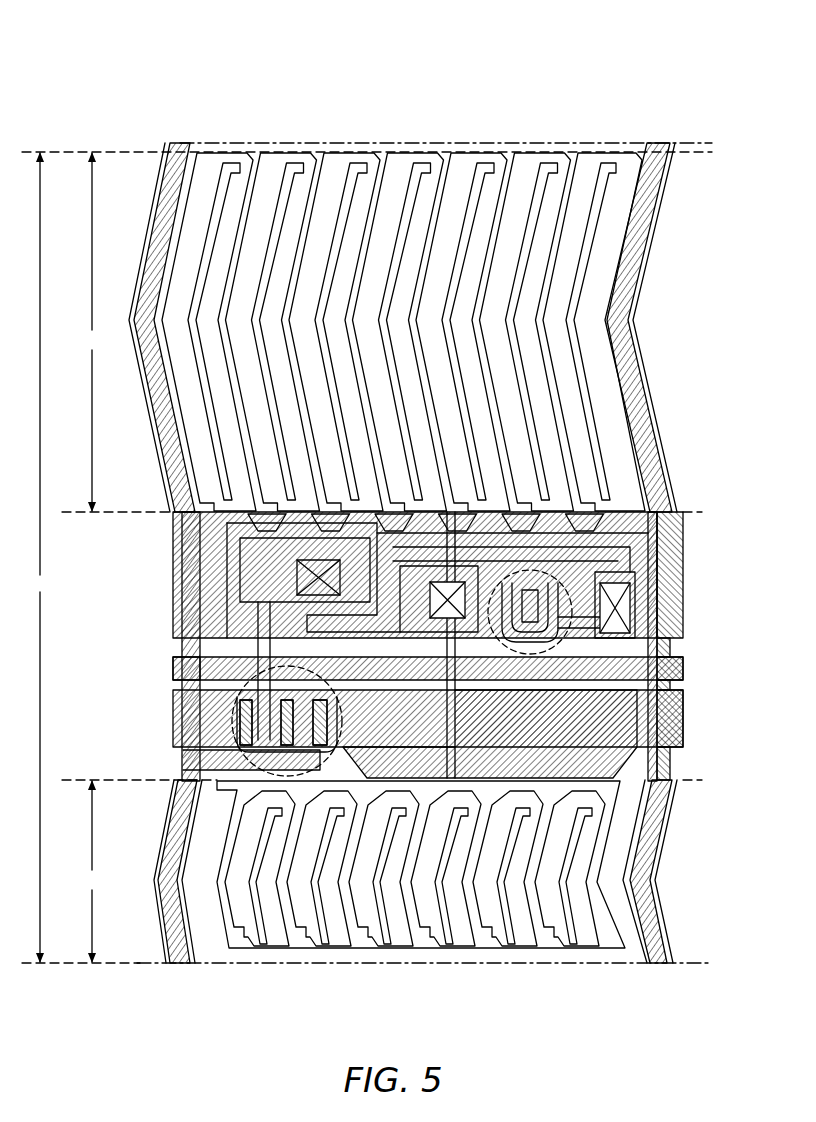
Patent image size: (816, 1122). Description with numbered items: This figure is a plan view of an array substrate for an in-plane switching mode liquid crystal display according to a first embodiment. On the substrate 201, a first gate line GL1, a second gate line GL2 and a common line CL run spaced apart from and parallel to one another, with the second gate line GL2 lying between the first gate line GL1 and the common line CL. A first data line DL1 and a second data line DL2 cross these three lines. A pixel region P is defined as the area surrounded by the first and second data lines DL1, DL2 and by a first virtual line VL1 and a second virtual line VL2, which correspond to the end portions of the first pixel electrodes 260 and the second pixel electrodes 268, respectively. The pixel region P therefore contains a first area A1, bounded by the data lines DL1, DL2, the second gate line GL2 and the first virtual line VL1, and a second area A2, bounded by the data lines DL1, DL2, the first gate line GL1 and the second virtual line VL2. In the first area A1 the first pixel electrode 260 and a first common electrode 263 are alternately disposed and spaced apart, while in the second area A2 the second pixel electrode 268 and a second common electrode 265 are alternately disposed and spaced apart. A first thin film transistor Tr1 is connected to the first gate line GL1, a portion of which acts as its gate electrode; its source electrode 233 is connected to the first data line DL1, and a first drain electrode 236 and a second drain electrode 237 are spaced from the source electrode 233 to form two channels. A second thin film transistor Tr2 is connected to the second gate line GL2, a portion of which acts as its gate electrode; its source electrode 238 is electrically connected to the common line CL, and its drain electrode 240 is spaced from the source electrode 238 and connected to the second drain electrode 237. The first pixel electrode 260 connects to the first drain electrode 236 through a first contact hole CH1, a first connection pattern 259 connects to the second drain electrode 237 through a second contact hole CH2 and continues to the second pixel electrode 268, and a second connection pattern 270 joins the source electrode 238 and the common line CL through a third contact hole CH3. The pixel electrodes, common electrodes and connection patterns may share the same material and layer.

The substrate 201 is at (625, 92).
The first virtual line VL1 is at (702, 142).
The second virtual line VL2 is at (710, 966).
The pixel region P is at (40, 557).
The first area A1 is at (92, 332).
The second area A2 is at (92, 871).
The first data line DL1 is at (178, 470).
The second data line DL2 is at (655, 405).
The first common electrode 263 is at (540, 328).
The first pixel electrode 260 is at (596, 386).
The common line CL is at (684, 590).
The source electrode of the second TFT 238 is at (684, 690).
The first connection pattern 259 is at (432, 598).
The first contact hole CH1 is at (318, 563).
The drain electrode of the second TFT 240 is at (524, 560).
The second contact hole CH2 is at (445, 580).
The second connection pattern 270 is at (684, 640).
The second thin film transistor Tr2 is at (662, 650).
The third contact hole CH3 is at (618, 580).
The second gate line GL2 is at (690, 668).
The first drain electrode 236 is at (184, 665).
The first gate line GL1 is at (690, 720).
The first thin film transistor Tr1 is at (236, 704).
The source electrode of the first TFT 233 is at (326, 726).
The second drain electrode 237 is at (302, 700).
The second pixel electrode 268 is at (596, 870).
The second common electrode 265 is at (560, 845).